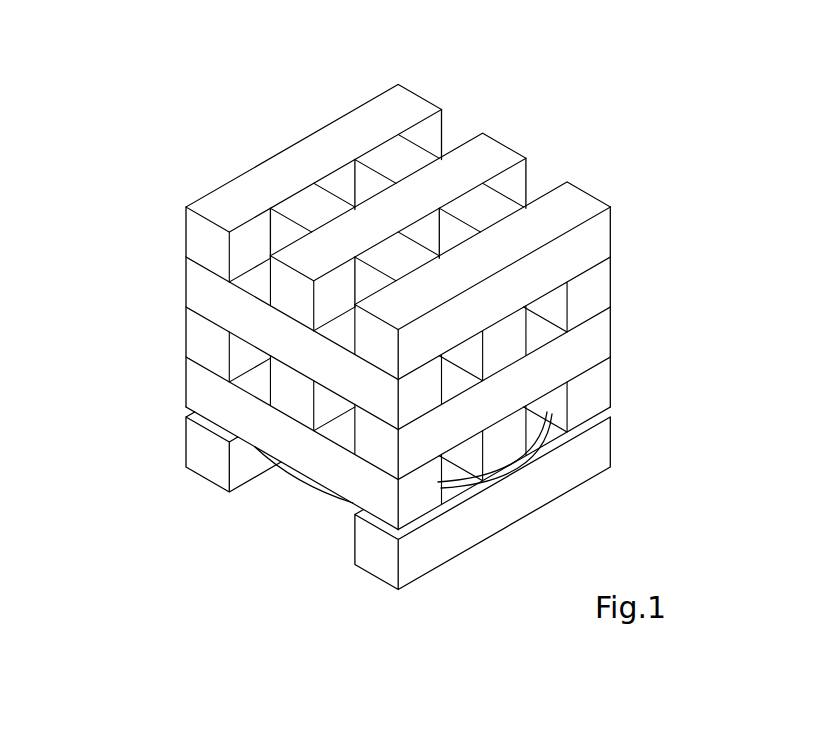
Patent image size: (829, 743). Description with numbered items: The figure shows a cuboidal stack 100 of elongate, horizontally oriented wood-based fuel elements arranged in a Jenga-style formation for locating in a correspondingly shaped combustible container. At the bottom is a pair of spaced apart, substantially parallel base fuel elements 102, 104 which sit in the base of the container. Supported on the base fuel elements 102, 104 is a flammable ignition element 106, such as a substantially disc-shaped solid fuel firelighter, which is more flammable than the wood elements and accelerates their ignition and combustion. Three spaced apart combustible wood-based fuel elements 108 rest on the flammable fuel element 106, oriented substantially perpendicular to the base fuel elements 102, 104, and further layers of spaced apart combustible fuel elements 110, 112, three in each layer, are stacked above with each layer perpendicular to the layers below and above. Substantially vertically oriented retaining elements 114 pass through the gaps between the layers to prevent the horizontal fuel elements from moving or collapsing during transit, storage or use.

The cuboidal stack 100 is at (240, 107).
The base fuel element 102 is at (595, 455).
The base fuel element 104 is at (197, 453).
The flammable ignition element 106 is at (297, 480).
The combustible wood-based fuel elements 108 is at (590, 386).
The combustible fuel elements 110 is at (186, 330).
The combustible fuel elements 112 is at (613, 272).
The retaining elements 114 is at (495, 206).